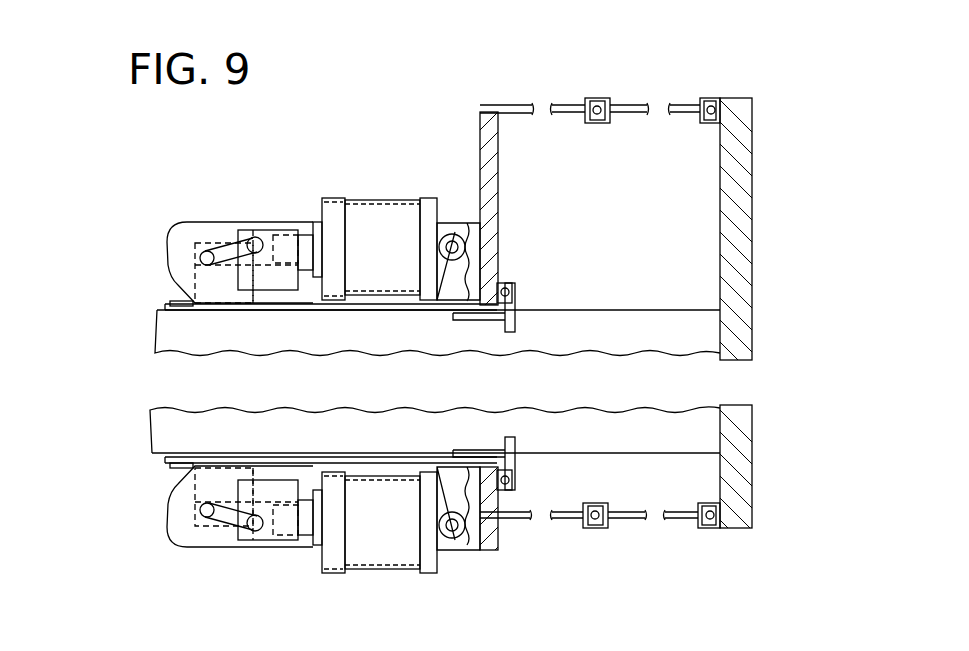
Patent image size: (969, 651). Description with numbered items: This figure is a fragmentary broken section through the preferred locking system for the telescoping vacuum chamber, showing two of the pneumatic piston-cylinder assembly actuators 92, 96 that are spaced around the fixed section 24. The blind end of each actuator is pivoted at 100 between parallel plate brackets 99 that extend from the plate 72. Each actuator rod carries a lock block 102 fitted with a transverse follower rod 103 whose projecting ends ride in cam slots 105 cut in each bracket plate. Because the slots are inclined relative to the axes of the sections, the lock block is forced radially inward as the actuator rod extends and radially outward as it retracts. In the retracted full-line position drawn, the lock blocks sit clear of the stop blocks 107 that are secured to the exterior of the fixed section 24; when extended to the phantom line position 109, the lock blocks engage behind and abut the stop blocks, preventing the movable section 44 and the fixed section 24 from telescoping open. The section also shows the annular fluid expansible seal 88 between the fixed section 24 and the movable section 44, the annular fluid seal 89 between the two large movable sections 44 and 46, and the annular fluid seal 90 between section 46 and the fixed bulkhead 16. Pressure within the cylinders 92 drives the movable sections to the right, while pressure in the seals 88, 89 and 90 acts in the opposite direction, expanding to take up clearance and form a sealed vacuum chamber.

The fixed bulkhead 16 is at (751, 220).
The fixed section 24 is at (195, 315).
The movable section 44 is at (486, 103).
The movable section 46 is at (688, 104).
The plate 72 is at (492, 240).
The annular fluid expansible seal 88 is at (510, 292).
The annular fluid seal 89 is at (592, 98).
The annular fluid seal 90 is at (712, 98).
The pneumatic piston-cylinder assembly actuator 92 is at (365, 202).
The pneumatic piston-cylinder assembly actuator 96 is at (383, 540).
The parallel plate brackets 99 is at (190, 218).
The pivot 100 is at (452, 240).
The lock block 102 is at (275, 275).
The transverse follower rod 103 is at (255, 243).
The cam slots 105 is at (232, 248).
The stop blocks 107 is at (165, 300).
The phantom line position 109 is at (195, 257).